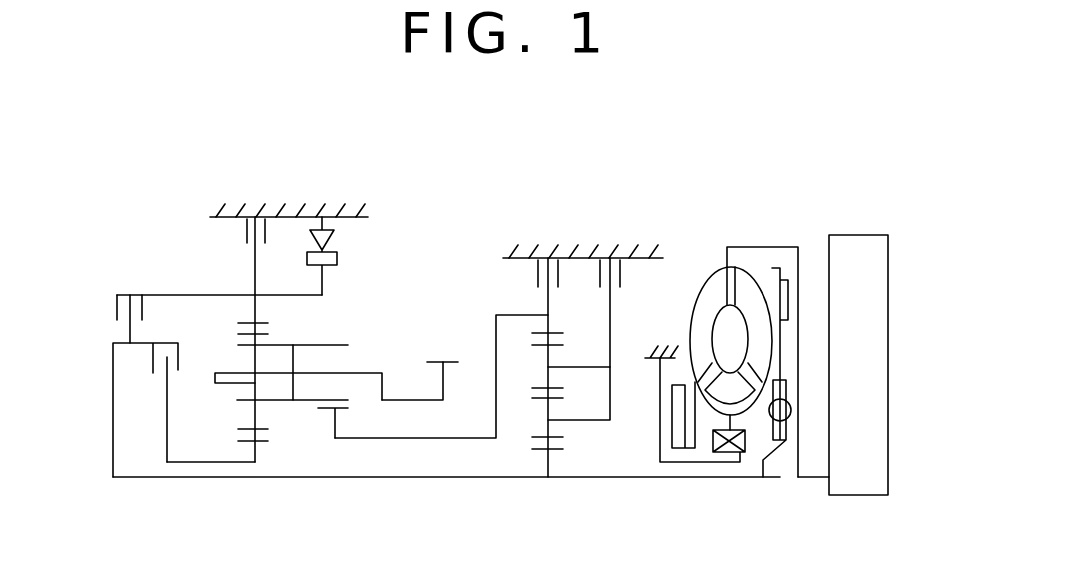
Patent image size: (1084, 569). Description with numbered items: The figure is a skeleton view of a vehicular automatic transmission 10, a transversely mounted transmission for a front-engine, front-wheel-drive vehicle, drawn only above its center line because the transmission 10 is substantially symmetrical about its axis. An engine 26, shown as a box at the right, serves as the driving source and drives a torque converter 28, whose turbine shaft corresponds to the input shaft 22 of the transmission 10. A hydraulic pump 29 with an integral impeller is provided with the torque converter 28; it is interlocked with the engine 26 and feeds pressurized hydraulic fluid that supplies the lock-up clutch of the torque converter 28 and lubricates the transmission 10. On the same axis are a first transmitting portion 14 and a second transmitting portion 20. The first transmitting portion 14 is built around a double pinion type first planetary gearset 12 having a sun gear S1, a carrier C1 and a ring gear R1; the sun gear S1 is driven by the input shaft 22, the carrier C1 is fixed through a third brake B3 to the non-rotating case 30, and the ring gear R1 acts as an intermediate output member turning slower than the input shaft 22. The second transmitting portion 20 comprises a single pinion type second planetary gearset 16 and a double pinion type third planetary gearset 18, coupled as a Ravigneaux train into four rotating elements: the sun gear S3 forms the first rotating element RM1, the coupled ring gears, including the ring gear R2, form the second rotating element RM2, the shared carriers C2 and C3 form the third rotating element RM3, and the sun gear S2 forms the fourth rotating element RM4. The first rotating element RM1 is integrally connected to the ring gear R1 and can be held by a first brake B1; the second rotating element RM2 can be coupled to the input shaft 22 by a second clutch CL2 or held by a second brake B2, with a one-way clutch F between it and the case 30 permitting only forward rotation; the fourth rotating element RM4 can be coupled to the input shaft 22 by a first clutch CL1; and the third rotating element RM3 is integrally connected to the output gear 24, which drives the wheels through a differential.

The vehicular automatic transmission 10 is at (660, 182).
The first planetary gearset 12 is at (544, 481).
The first transmitting portion 14 is at (490, 267).
The second planetary gearset 16 is at (250, 470).
The third planetary gearset 18 is at (340, 449).
The second transmitting portion 20 is at (394, 225).
The input shaft 22 is at (626, 480).
The output gear 24 is at (433, 358).
The engine 26 is at (867, 234).
The torque converter 28 is at (733, 241).
The hydraulic pump 29 is at (682, 460).
The case 30 is at (275, 203).
The first brake B1 is at (528, 275).
The second brake B2 is at (235, 234).
The third brake B3 is at (627, 312).
The carrier C1 is at (611, 399).
The carrier C2 is at (237, 385).
The carrier C3 is at (335, 372).
The one-way clutch F is at (331, 256).
The first clutch CL1 is at (154, 394).
The second clutch CL2 is at (115, 303).
The first rotating element RM1 is at (407, 441).
The second rotating element RM2 is at (237, 293).
The third rotating element RM3 is at (407, 404).
The fourth rotating element RM4 is at (215, 461).
The ring gear R1 is at (556, 333).
The ring gear R2 is at (262, 327).
The sun gear S1 is at (556, 450).
The sun gear S2 is at (268, 444).
The sun gear S3 is at (343, 409).